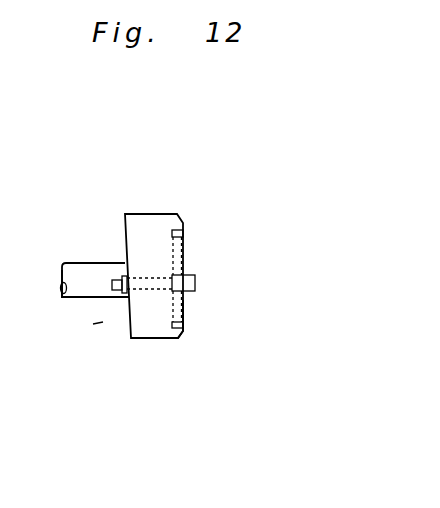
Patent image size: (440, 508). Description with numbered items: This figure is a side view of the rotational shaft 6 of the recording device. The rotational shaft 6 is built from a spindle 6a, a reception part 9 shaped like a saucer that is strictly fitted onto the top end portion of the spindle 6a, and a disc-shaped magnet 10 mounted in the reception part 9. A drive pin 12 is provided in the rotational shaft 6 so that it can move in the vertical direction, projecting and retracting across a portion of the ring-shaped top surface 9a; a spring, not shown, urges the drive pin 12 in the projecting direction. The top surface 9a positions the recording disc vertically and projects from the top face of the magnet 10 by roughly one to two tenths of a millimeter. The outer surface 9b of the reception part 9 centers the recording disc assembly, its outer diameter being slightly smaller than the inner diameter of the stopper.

The rotational shaft 6 is at (112, 231).
The spindle 6a is at (83, 287).
The reception part 9 is at (155, 214).
The top surface 9a is at (184, 332).
The outer surface 9b is at (160, 329).
The magnet 10 is at (183, 243).
The drive pin 12 is at (195, 282).